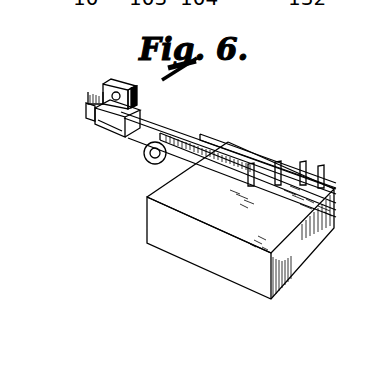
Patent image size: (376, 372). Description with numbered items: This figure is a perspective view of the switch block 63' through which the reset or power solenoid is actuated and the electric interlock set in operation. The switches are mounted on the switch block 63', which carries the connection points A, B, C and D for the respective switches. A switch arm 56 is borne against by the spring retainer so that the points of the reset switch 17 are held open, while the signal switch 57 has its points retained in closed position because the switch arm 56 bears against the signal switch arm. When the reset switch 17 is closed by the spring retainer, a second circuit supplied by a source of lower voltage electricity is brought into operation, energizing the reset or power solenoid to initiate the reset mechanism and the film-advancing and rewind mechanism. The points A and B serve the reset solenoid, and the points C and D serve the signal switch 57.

The switch block 63' is at (257, 220).
The signal switch 57 is at (189, 128).
The switch arm 56 is at (132, 131).
The reset switch 17 is at (158, 161).
The connection point A is at (252, 165).
The connection point B is at (278, 162).
The connection point C is at (304, 161).
The connection point D is at (323, 166).